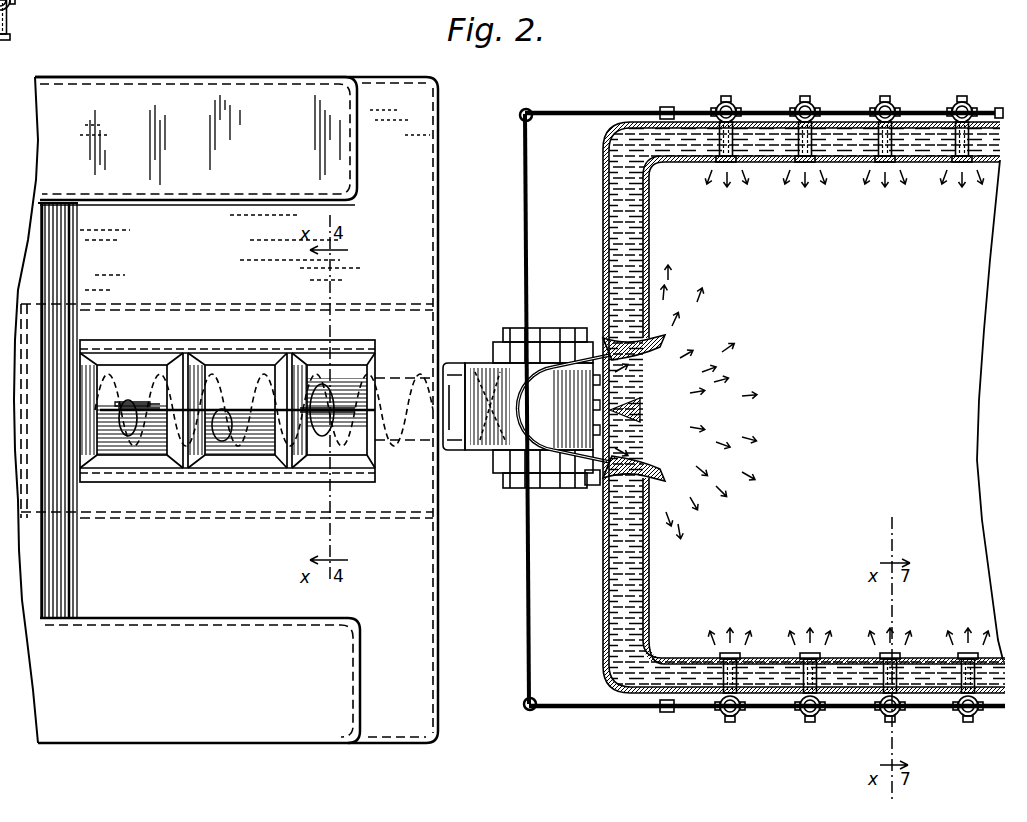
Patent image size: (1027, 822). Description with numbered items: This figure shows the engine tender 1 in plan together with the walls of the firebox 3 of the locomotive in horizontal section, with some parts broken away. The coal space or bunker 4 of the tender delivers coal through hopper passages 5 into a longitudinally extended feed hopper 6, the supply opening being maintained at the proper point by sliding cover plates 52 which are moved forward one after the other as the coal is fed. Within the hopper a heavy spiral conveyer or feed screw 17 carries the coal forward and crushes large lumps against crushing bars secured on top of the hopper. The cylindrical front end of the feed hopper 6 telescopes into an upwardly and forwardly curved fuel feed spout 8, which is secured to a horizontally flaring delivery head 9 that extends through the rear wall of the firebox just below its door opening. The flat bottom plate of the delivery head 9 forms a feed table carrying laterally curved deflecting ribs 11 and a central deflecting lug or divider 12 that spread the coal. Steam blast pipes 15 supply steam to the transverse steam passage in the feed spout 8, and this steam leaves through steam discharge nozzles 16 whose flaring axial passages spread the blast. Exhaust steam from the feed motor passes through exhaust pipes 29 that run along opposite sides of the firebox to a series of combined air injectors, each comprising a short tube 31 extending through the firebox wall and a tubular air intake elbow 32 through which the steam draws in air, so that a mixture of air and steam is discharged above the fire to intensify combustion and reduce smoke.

The engine tender 1 is at (233, 78).
The walls of the firebox 3 is at (645, 222).
The coal space or bunker 4 is at (227, 366).
The hopper passages 5 is at (212, 462).
The feed hopper 6 is at (335, 378).
The fuel feed spout 8 is at (493, 387).
The delivery head 9 is at (580, 363).
The deflecting ribs 11 is at (664, 349).
The central deflecting lug or divider 12 is at (650, 415).
The steam blast pipes 15 is at (578, 367).
The steam discharge nozzles 16 is at (590, 485).
The spiral conveyer or feed screw 17 is at (128, 425).
The exhaust pipes 29 is at (532, 217).
The tubes 31 is at (735, 164).
The tubular air intake elbows 32 is at (735, 103).
The cover plates 52 is at (203, 372).